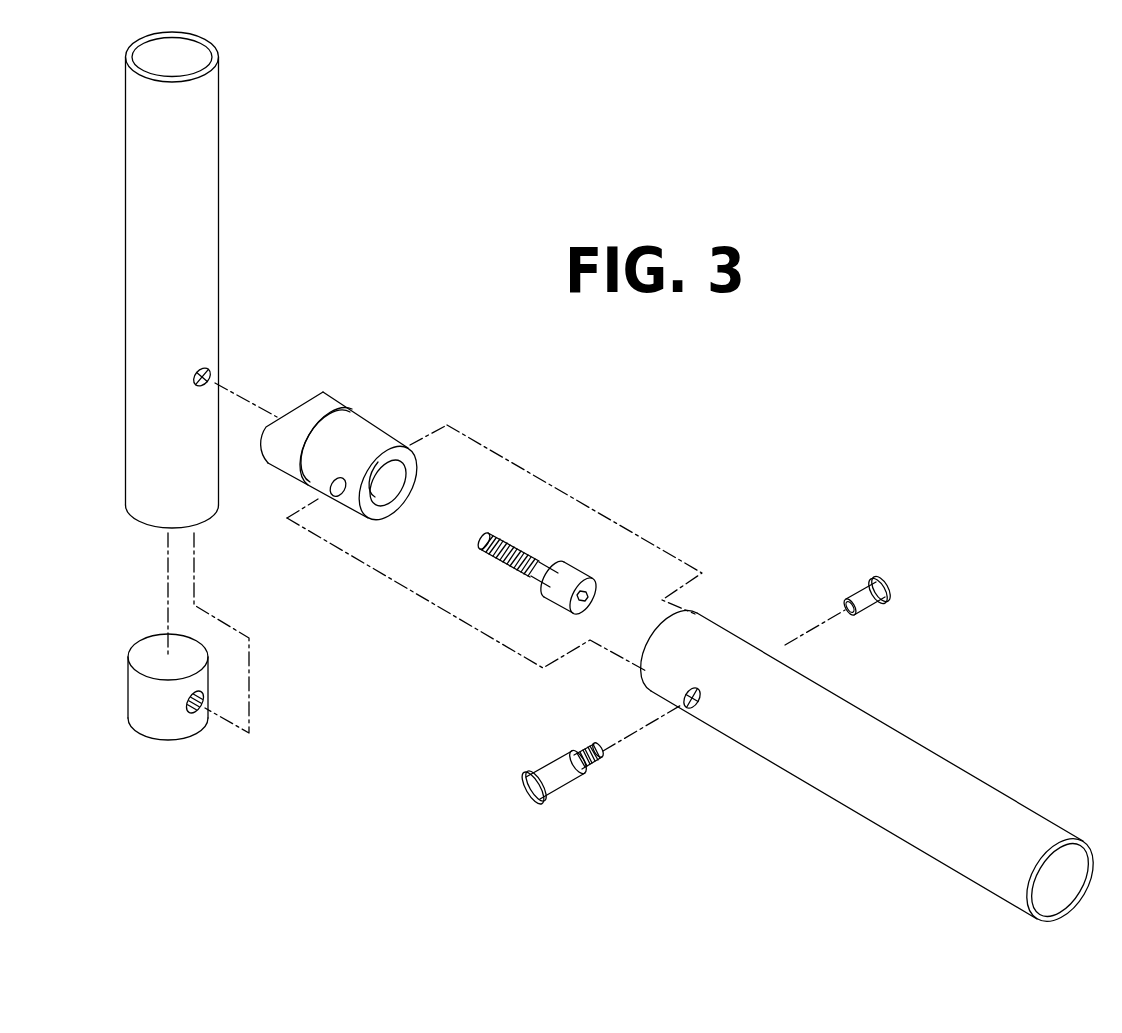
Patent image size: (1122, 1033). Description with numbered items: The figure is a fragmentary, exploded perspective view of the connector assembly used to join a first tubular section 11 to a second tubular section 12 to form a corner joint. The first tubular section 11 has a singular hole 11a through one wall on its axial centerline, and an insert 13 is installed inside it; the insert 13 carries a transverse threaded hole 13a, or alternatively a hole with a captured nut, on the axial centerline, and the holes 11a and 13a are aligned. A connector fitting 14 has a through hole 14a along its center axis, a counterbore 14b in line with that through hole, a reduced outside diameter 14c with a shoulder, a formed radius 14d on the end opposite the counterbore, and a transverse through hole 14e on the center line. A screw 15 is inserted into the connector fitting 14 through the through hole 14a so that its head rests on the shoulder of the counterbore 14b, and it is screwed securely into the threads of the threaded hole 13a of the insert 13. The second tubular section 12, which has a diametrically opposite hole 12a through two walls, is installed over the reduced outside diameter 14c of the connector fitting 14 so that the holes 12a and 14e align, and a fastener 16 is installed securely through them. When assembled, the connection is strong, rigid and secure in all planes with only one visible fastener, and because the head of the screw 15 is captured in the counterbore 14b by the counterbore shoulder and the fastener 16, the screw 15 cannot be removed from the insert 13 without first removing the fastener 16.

The first tubular section 11 is at (236, 280).
The singular hole 11a is at (208, 370).
The second tubular section 12 is at (874, 771).
The diametrically opposite hole 12a is at (688, 710).
The insert 13 is at (143, 713).
The transverse threaded hole 13a is at (200, 713).
The connector fitting 14 is at (446, 454).
The through hole 14a is at (497, 470).
The counterbore 14b is at (407, 472).
The reduced outside diameter 14c is at (450, 459).
The formed radius 14d is at (298, 405).
The transverse through hole 14e is at (333, 493).
The screw 15 is at (572, 582).
The fastener 16 is at (875, 570).